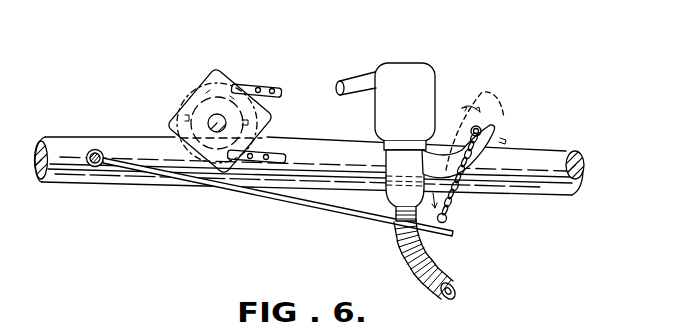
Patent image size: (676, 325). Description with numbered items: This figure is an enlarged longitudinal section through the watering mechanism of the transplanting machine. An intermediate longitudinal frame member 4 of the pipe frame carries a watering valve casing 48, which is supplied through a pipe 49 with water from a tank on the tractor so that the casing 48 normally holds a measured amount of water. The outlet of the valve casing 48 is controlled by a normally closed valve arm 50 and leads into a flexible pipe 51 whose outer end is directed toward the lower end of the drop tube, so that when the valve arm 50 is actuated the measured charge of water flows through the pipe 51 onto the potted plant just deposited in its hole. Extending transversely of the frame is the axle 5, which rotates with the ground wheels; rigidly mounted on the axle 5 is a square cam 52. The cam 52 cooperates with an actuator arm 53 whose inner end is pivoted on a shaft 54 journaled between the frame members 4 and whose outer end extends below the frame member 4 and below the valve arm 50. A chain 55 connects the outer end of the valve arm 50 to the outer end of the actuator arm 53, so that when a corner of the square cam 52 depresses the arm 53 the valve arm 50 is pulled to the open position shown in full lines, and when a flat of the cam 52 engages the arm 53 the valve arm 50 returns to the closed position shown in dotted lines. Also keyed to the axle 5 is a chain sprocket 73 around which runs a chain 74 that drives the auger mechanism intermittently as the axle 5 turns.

The longitudinal bar 4 is at (70, 140).
The axle 5 is at (232, 119).
The watering valve casing 48 is at (420, 86).
The pipe 49 is at (352, 87).
The valve arm 50 is at (495, 124).
The flexible pipe 51 is at (422, 258).
The square cam 52 is at (224, 77).
The actuator arm 53 is at (276, 199).
The shaft 54 is at (97, 151).
The chain 55 is at (526, 178).
The chain sprocket 73 is at (197, 84).
The chain 74 is at (265, 86).